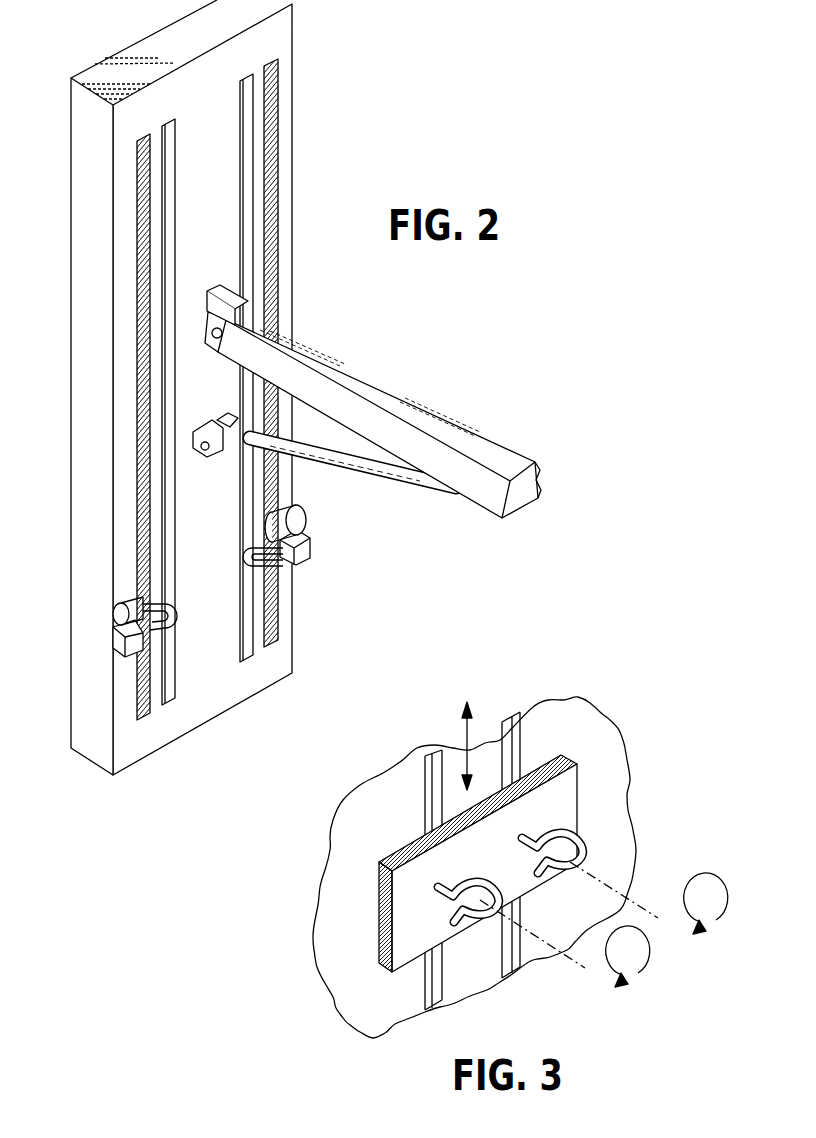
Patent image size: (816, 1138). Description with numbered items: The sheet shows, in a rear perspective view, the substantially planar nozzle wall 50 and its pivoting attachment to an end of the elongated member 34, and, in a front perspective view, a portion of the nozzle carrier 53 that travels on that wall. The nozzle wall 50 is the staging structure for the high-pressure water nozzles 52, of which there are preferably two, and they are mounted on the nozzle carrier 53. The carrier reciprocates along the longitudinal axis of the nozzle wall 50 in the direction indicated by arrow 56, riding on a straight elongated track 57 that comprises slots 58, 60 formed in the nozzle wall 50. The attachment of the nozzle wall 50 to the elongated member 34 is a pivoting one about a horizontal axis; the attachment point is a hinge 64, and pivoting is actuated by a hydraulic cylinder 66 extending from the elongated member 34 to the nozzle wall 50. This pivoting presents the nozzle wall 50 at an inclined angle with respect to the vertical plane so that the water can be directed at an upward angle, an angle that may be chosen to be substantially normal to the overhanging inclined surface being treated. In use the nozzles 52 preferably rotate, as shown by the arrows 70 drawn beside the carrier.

In FIG. 2, the elongated member 34 is at (390, 383).
In FIG. 2, the nozzle wall 50 is at (270, 43).
In FIG. 3, the high-pressure water nozzles 52 is at (577, 840).
In FIG. 3, the nozzle carrier 53 is at (560, 793).
In FIG. 3, the arrow 56 is at (493, 723).
In FIG. 3, the track 57 is at (497, 1007).
In FIG. 2, the slot 58 is at (246, 145).
In FIG. 3, the slot 58 is at (413, 780).
In FIG. 2, the slot 60 is at (165, 262).
In FIG. 3, the slot 60 is at (530, 740).
In FIG. 2, the hinge 64 is at (208, 338).
In FIG. 2, the hydraulic cylinder 66 is at (375, 462).
In FIG. 3, the arrows 70 is at (645, 1003).